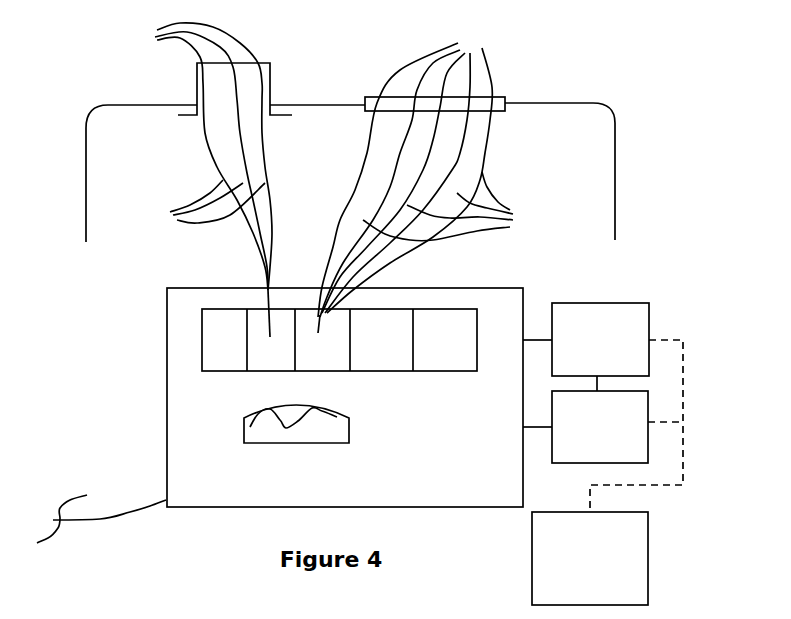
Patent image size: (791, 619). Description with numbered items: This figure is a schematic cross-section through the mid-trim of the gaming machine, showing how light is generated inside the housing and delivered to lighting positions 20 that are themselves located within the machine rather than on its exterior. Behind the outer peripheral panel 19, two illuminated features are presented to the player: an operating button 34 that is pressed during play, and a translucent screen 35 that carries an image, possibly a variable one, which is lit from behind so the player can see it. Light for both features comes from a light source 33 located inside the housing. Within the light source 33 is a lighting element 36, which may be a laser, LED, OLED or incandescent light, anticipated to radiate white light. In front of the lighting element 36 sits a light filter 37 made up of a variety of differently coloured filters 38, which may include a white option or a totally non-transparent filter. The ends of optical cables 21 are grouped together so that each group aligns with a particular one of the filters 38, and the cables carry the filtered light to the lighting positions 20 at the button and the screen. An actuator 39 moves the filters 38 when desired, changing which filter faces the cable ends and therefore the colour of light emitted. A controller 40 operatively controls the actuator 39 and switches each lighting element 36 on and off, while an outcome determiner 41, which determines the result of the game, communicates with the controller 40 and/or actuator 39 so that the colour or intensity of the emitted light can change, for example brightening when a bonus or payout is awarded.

The outer peripheral panel 19 is at (587, 137).
The lighting positions 20 is at (311, 180).
The optical cables 21 is at (342, 206).
The light source 33 is at (166, 362).
The operating button 34 is at (283, 64).
The translucent screen 35 is at (507, 97).
The lighting element 36 is at (243, 440).
The light filter 37 is at (190, 333).
The coloured filters 38 is at (223, 360).
The actuator 39 is at (651, 313).
The controller 40 is at (650, 404).
The outcome determiner 41 is at (648, 532).